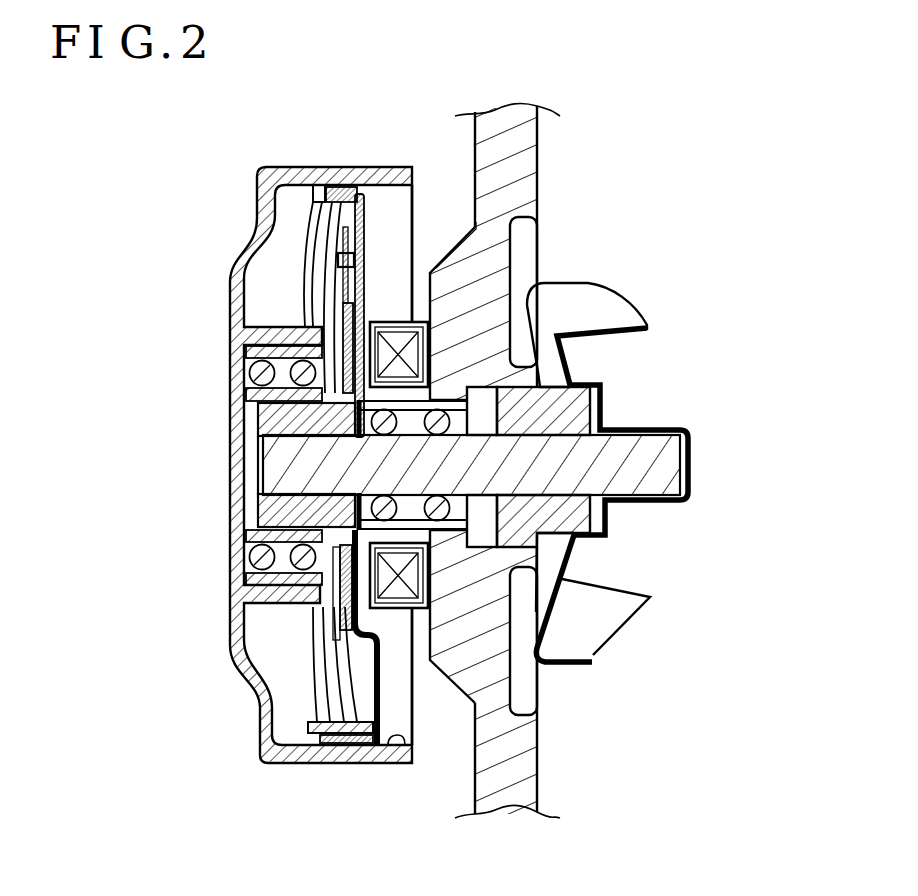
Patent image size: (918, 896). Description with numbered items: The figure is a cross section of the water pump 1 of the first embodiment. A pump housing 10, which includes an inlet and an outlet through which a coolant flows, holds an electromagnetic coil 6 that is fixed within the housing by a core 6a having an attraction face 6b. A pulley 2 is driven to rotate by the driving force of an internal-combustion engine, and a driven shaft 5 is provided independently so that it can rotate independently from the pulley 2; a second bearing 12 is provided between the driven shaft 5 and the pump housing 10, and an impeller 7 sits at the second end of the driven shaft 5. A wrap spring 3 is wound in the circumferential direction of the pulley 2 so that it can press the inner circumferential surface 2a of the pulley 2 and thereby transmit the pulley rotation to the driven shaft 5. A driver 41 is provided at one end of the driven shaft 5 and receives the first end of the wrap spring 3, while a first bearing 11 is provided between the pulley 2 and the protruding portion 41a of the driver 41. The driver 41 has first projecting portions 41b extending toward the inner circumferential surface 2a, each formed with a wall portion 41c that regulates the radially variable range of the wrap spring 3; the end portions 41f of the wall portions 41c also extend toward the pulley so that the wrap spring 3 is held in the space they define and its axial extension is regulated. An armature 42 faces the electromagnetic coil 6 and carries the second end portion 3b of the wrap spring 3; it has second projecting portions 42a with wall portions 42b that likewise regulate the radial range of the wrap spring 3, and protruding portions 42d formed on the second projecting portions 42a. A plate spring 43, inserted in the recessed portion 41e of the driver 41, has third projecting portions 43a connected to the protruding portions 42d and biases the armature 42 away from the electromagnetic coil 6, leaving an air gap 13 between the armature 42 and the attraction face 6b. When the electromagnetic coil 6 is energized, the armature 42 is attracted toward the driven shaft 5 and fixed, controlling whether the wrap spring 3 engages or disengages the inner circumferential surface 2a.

The water pump 1 is at (653, 729).
The pulley 2 is at (372, 762).
The inner circumferential surface 2a is at (396, 746).
The wrap spring 3 is at (406, 719).
The second end portion 3b is at (318, 185).
The driven shaft 5 is at (652, 427).
The electromagnetic coil 6 is at (410, 607).
The core 6a is at (430, 318).
The attraction face 6b is at (476, 229).
The impeller 7 is at (566, 362).
The pump housing 10 is at (512, 746).
The first bearing 11 is at (262, 372).
The second bearing 12 is at (293, 360).
The air gap 13 is at (342, 645).
The driver 41 is at (262, 507).
The protruding portion 41a is at (262, 422).
The first projecting portions 41b is at (372, 690).
The wall portions 41c is at (343, 746).
The recessed portion 41e is at (262, 597).
The end portions 41f is at (305, 747).
The armature 42 is at (357, 270).
The second projecting portions 42a is at (413, 167).
The wall portions 42b is at (350, 190).
The protruding portions 42d is at (308, 192).
The plate spring 43 is at (343, 320).
The third projecting portions 43a is at (340, 257).